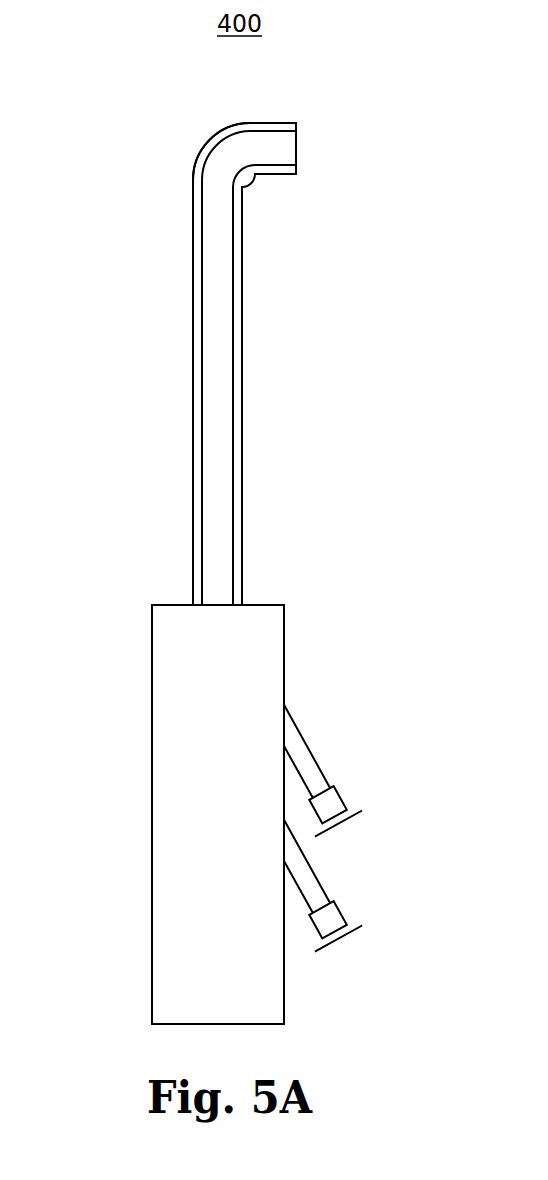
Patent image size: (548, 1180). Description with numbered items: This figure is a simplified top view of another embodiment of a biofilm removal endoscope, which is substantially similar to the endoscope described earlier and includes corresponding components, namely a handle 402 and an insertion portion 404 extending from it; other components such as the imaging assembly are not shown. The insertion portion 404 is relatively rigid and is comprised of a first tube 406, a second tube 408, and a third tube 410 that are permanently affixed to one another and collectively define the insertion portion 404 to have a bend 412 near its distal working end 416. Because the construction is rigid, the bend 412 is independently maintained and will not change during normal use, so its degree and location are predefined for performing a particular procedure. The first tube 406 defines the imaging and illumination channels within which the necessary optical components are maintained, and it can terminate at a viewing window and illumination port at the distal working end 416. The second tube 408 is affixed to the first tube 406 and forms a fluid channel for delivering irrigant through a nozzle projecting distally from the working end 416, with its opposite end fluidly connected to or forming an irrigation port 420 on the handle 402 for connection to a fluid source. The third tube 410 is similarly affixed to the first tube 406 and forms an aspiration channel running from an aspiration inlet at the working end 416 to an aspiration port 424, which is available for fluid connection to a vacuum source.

The handle 402 is at (182, 843).
The insertion portion 404 is at (182, 507).
The first tube 406 is at (220, 350).
The second tube 408 is at (193, 407).
The third tube 410 is at (243, 407).
The bend 412 is at (205, 147).
The distal working end 416 is at (296, 143).
The irrigation port 420 is at (347, 910).
The aspiration port 424 is at (322, 753).